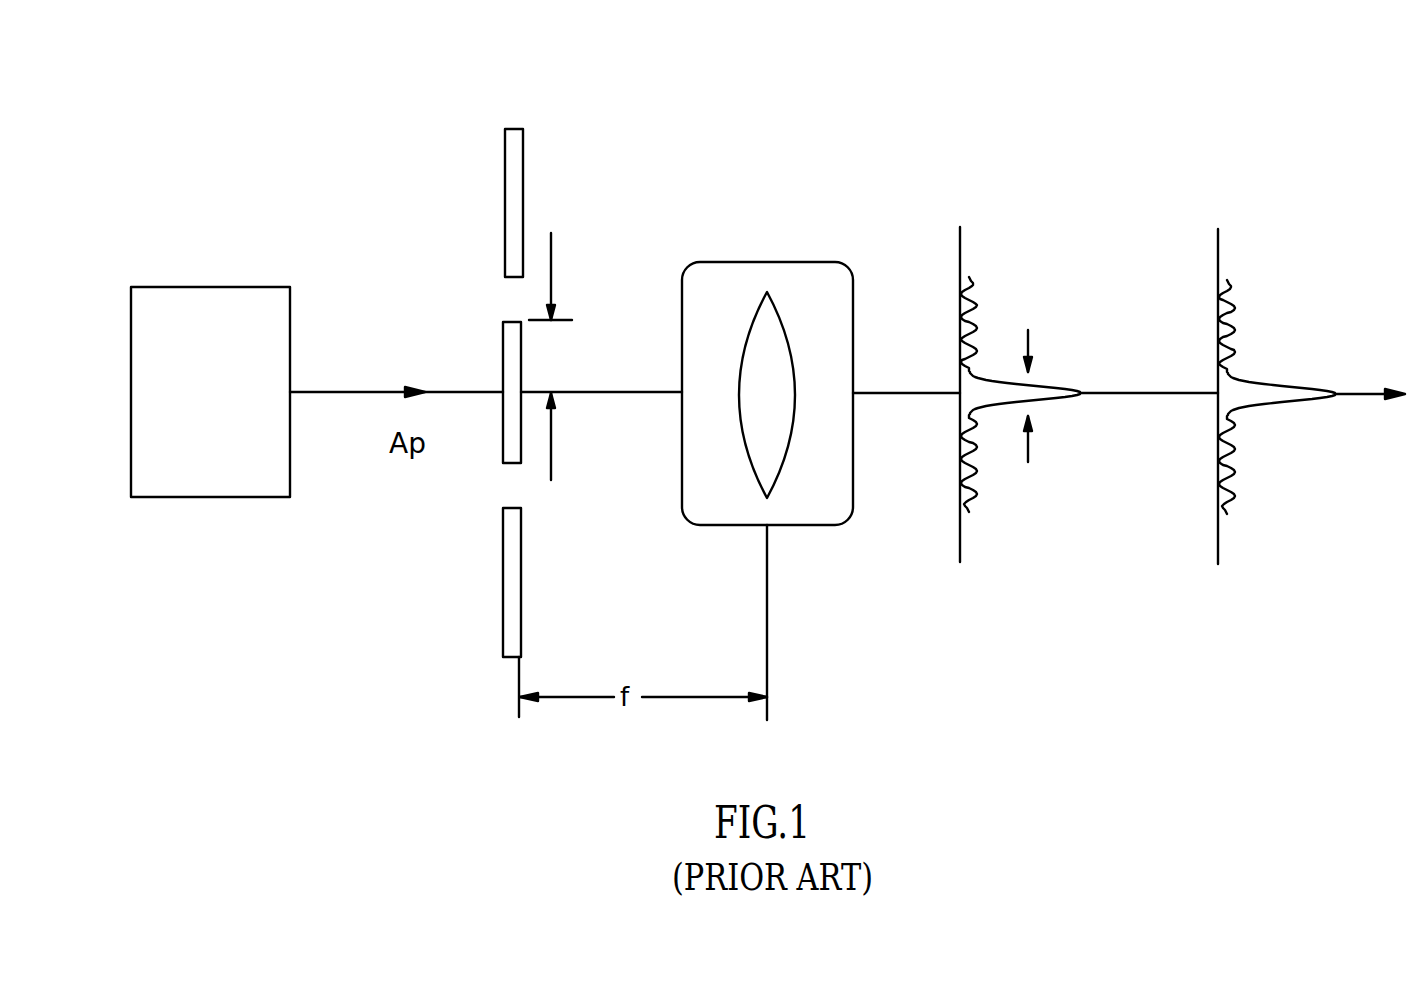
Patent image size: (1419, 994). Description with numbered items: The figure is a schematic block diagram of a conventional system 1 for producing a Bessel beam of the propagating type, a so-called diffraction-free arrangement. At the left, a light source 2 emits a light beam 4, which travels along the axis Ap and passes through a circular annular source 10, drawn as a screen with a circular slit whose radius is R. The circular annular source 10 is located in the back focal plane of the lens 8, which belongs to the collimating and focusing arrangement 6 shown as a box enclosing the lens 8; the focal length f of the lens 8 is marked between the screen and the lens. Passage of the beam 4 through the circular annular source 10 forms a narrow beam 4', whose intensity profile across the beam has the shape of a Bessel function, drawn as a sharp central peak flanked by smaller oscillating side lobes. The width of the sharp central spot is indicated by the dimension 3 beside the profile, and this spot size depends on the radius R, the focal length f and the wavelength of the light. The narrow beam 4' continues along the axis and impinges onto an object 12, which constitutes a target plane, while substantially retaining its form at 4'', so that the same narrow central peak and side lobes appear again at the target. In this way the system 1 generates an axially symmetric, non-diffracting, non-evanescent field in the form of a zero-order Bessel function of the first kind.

The system 1 is at (308, 127).
The light source 2 is at (217, 287).
The light beam 4 is at (396, 324).
The circular annular source 10 is at (580, 98).
The collimating and focusing arrangement 6 is at (840, 240).
The lens 8 is at (748, 328).
The narrow beam 4' is at (1020, 363).
The spot size 3 is at (1039, 400).
The object 12 is at (1220, 249).
The beam at target plane 4'' is at (1309, 340).